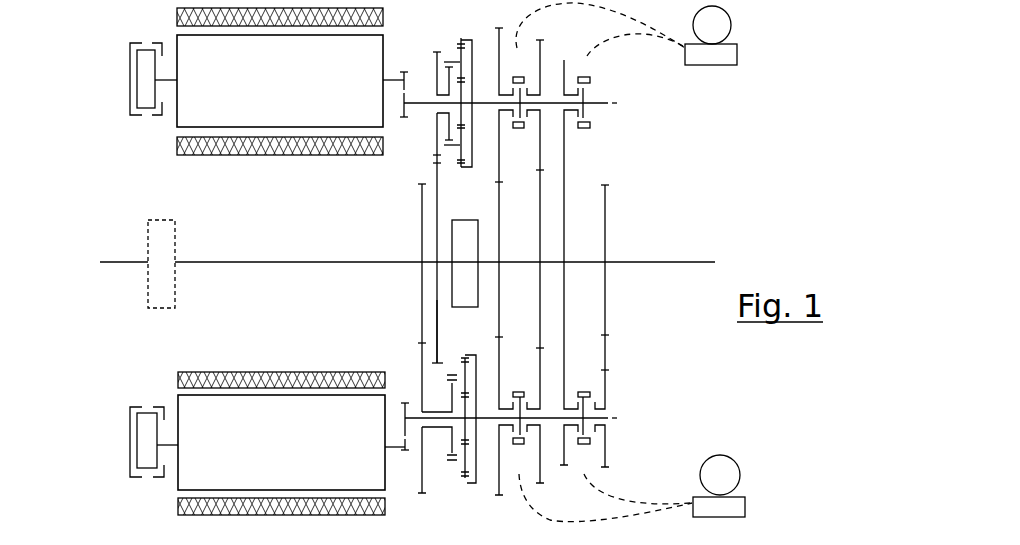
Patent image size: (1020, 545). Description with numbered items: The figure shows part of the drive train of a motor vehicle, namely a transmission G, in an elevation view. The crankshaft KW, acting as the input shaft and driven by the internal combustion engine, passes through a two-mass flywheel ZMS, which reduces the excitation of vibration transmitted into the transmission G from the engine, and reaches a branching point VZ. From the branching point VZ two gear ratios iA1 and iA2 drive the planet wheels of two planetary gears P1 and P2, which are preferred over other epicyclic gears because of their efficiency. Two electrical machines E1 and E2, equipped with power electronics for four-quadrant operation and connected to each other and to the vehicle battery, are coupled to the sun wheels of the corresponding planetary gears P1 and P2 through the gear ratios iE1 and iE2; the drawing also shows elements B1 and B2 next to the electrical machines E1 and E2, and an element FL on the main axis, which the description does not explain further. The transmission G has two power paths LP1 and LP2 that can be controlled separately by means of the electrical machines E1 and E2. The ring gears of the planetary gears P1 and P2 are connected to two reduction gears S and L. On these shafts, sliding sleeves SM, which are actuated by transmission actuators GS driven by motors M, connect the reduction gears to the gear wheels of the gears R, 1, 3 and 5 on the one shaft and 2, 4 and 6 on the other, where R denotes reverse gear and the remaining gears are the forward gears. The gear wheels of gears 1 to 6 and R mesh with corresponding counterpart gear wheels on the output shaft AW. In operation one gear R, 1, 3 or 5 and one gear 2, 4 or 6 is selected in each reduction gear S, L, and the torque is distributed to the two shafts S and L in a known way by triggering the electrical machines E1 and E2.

The first forward gear 1 is at (568, 383).
The second forward gear 2 is at (567, 148).
The third forward gear 3 is at (536, 396).
The fourth forward gear 4 is at (536, 141).
The fifth forward gear 5 is at (503, 397).
The sixth forward gear 6 is at (502, 135).
The reverse gear R is at (602, 464).
The reduction gear S is at (518, 108).
The reduction gear L is at (518, 429).
The transmission G is at (633, 215).
The first power path LP1 is at (635, 389).
The second power path LP2 is at (594, 143).
The first planetary gear P1 is at (447, 443).
The second planetary gear P2 is at (452, 94).
The first electrical machine E1 is at (281, 443).
The second electrical machine E2 is at (280, 81).
The first brake B1 is at (154, 458).
The second brake B2 is at (153, 94).
The sliding sleeve SM is at (551, 267).
The transmission actuator GS is at (645, 262).
The motor M is at (716, 250).
The crankshaft KW is at (115, 254).
The output shaft AW is at (445, 251).
The branching point VZ is at (405, 298).
The freewheel FL is at (465, 263).
The two-mass flywheel ZMS is at (161, 264).
The gear ratio iE1 is at (399, 448).
The gear ratio iE2 is at (397, 82).
The gear ratio iA1 is at (416, 331).
The gear ratio iA2 is at (445, 238).